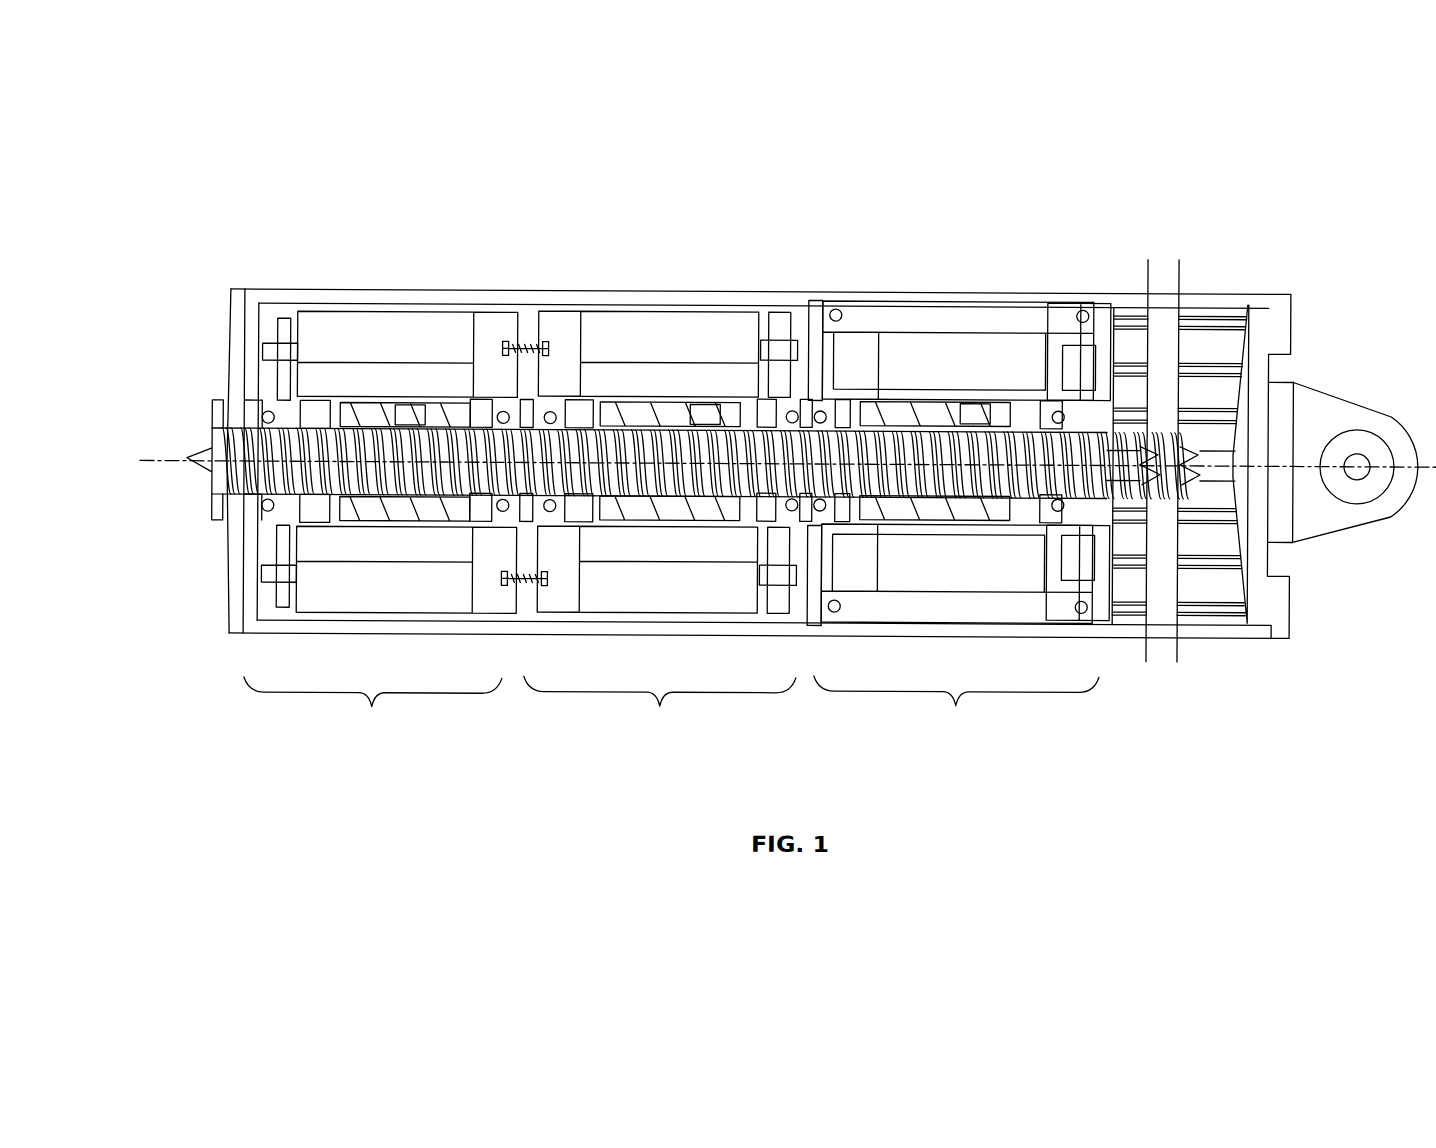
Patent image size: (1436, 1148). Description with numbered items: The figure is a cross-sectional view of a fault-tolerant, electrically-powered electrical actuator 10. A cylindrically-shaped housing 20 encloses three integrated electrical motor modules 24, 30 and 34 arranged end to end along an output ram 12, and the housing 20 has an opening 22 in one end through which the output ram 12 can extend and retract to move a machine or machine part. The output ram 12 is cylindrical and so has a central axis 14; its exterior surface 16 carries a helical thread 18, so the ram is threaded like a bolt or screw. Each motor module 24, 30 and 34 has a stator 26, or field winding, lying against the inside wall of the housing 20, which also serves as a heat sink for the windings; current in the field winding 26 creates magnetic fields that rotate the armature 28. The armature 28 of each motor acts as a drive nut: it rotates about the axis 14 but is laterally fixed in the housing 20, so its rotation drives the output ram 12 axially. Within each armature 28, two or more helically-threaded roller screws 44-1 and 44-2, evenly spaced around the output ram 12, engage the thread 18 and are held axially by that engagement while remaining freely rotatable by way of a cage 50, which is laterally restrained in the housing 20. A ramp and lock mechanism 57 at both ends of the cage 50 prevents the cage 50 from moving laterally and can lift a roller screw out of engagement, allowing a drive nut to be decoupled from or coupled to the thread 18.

The electrical actuator 10 is at (302, 184).
The output ram 12 is at (216, 445).
The central axis 14 is at (1398, 441).
The exterior surface 16 is at (220, 505).
The helical thread 18 is at (255, 500).
The housing 20 is at (1203, 287).
The opening 22 is at (214, 330).
The electrical motor module 24 is at (373, 711).
The stator 26 is at (358, 322).
The armature 28 is at (372, 405).
The electrical motor module 30 is at (660, 710).
The electrical motor module 34 is at (956, 711).
The roller screw 44-1 is at (384, 404).
The roller screw 44-2 is at (345, 515).
The cage 50 is at (409, 404).
The ramp and lock mechanism 57 is at (292, 342).